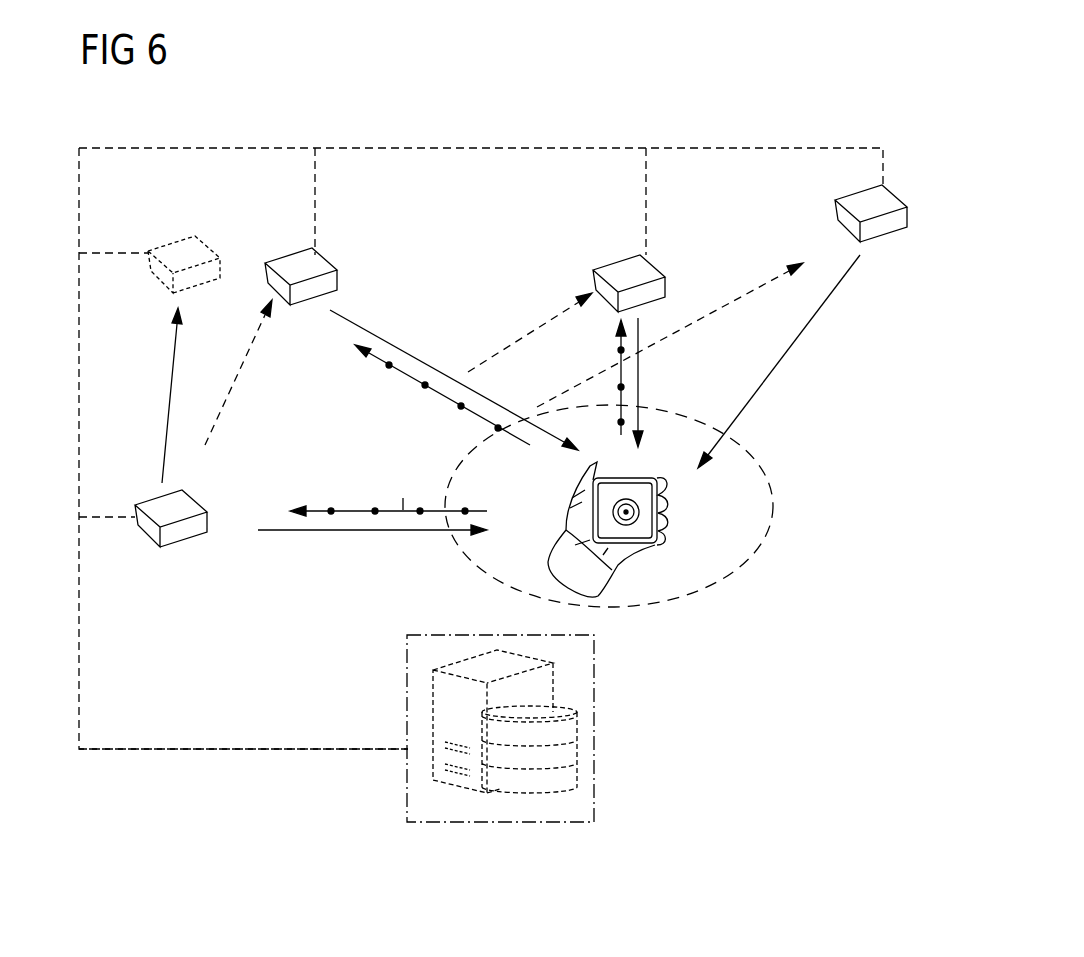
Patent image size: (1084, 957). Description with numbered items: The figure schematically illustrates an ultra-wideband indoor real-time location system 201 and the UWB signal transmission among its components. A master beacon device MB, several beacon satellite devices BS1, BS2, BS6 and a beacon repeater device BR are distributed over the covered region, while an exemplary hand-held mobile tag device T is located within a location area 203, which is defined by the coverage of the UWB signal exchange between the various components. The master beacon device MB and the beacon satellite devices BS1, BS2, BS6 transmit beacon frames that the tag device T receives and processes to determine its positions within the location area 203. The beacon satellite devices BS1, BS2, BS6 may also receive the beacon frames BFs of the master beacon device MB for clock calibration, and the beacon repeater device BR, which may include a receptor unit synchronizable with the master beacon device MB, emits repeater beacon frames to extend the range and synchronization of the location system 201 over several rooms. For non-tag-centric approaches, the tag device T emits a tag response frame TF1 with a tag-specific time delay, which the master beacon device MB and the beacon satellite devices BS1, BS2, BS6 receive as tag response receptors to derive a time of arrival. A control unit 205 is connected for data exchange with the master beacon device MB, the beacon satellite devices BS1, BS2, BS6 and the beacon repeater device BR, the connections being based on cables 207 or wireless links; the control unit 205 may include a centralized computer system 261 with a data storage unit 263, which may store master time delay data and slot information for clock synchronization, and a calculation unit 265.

The location system 201 is at (656, 108).
The location area 203 is at (773, 508).
The control unit 205 is at (468, 853).
The cables 207 is at (243, 748).
The centralized computer system 261 is at (593, 790).
The data storage unit 263 is at (578, 741).
The calculation unit 265 is at (555, 670).
The beacon repeater device BR is at (178, 245).
The beacon satellite device BS1 is at (297, 265).
The beacon satellite device BS2 is at (623, 270).
The beacon satellite device BS6 is at (878, 240).
The master beacon device MB is at (143, 535).
The portable device P is at (618, 512).
The mobile tag device T is at (575, 538).
The tag response frame TF1 is at (403, 508).
The beacon frames BFs is at (168, 395).